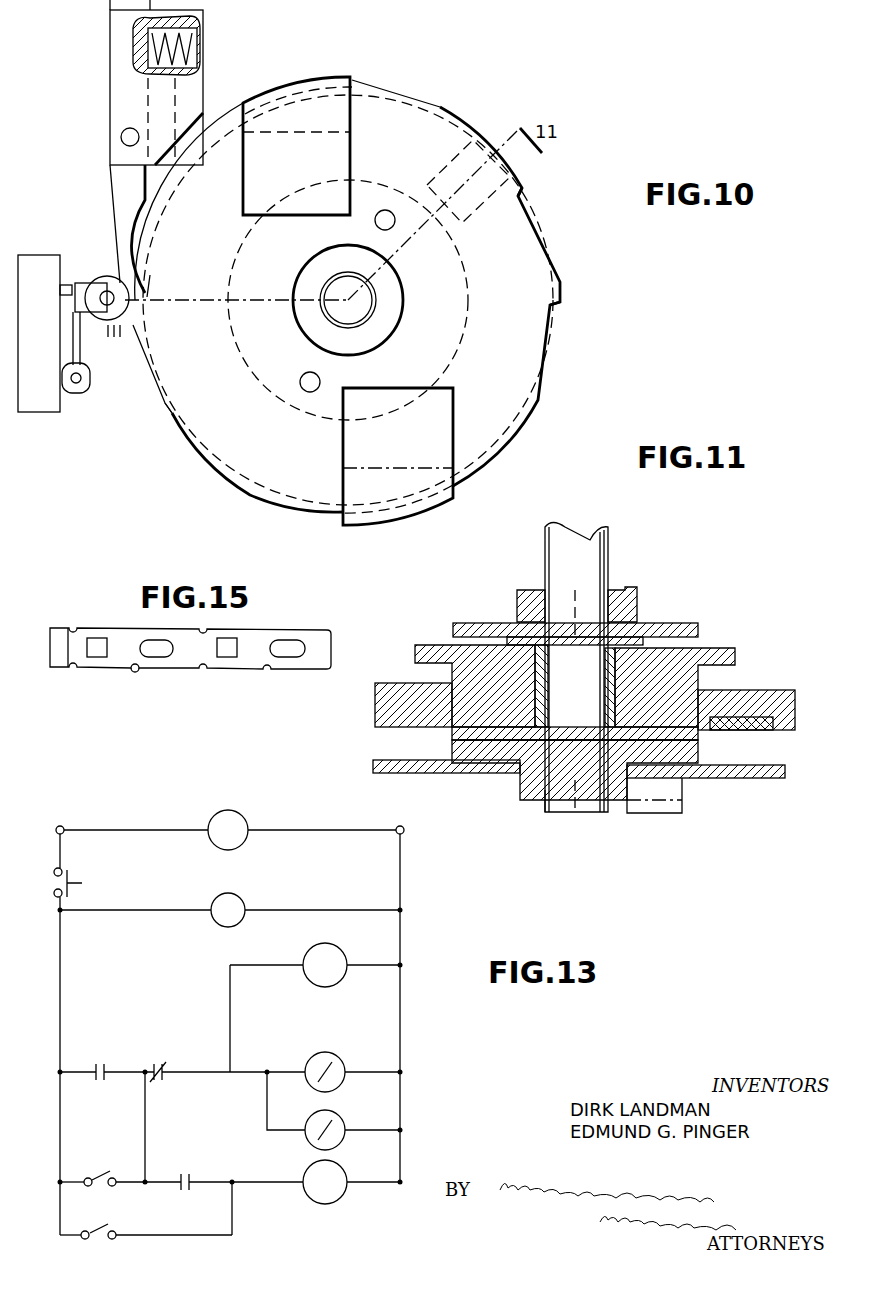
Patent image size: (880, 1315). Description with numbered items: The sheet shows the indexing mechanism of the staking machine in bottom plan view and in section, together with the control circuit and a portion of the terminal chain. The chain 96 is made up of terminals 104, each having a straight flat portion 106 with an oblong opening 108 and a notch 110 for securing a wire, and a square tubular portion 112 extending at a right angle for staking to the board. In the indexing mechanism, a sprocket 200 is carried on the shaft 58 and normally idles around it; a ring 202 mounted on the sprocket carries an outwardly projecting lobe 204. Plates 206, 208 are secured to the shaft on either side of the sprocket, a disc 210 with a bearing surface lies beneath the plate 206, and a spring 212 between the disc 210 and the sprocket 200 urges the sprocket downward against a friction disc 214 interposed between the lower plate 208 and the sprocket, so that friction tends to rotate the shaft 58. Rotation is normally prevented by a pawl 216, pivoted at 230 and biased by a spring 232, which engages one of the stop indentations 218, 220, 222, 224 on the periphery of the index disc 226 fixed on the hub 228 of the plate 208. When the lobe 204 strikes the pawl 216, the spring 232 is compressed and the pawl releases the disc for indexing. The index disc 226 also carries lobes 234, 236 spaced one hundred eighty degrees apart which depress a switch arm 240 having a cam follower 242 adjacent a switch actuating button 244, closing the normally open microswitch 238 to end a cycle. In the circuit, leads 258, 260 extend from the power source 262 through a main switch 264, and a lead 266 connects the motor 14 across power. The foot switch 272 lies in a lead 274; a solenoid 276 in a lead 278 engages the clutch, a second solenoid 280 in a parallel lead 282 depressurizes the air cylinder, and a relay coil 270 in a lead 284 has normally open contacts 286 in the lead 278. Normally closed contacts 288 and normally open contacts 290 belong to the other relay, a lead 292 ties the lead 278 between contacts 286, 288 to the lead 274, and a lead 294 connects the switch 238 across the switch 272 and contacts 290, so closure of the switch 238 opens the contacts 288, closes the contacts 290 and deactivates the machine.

In FIG. 11, the shaft 58 is at (612, 566).
In FIG. 15, the chain 96 is at (200, 675).
In FIG. 15, the terminal 104 is at (118, 668).
In FIG. 15, the straight flat portion 106 is at (138, 634).
In FIG. 15, the oblong opening 108 is at (172, 648).
In FIG. 15, the notch 110 is at (135, 670).
In FIG. 15, the square tubular portion 112 is at (97, 645).
In FIG. 13, the motor 14 is at (230, 893).
In FIG. 11, the sprocket 200 is at (420, 658).
In FIG. 11, the ring 202 is at (740, 692).
In FIG. 10, the lobe 204 is at (478, 138).
In FIG. 11, the lobe 204 is at (757, 735).
In FIG. 11, the plate 206 is at (521, 591).
In FIG. 11, the plate 208 is at (480, 772).
In FIG. 11, the disc 210 is at (458, 626).
In FIG. 11, the spring 212 is at (636, 638).
In FIG. 11, the friction disc 214 is at (455, 735).
In FIG. 10, the pawl 216 is at (110, 193).
In FIG. 10, the stop indentation 218 is at (170, 280).
In FIG. 10, the stop indentation 220 is at (168, 412).
In FIG. 10, the stop indentation 222 is at (552, 308).
In FIG. 10, the stop indentation 224 is at (524, 192).
In FIG. 10, the index disc 226 is at (514, 422).
In FIG. 11, the index disc 226 is at (732, 778).
In FIG. 11, the hub 228 is at (538, 798).
In FIG. 10, the pivot 230 is at (121, 136).
In FIG. 10, the spring 232 is at (202, 52).
In FIG. 10, the lobe 234 is at (352, 95).
In FIG. 10, the lobe 236 is at (448, 500).
In FIG. 10, the microswitch 238 is at (55, 410).
In FIG. 13, the microswitch 238 is at (97, 1226).
In FIG. 10, the switch arm 240 is at (82, 346).
In FIG. 10, the cam follower 242 is at (104, 280).
In FIG. 10, the switch actuating button 244 is at (66, 258).
In FIG. 13, the lead 258 is at (62, 985).
In FIG. 13, the lead 260 is at (403, 950).
In FIG. 13, the source of electrical power 262 is at (248, 818).
In FIG. 13, the main switch 264 is at (80, 868).
In FIG. 13, the lead 266 is at (138, 912).
In FIG. 13, the relay coil 270 is at (335, 985).
In FIG. 13, the manually operated switch 272 is at (100, 1172).
In FIG. 13, the lead 274 is at (164, 1187).
In FIG. 13, the solenoid 276 is at (333, 1056).
In FIG. 13, the lead 278 is at (252, 1068).
In FIG. 13, the second solenoid 280 is at (336, 1112).
In FIG. 13, the lead 282 is at (267, 1102).
In FIG. 13, the lead 284 is at (230, 988).
In FIG. 13, the contacts 286 is at (100, 1064).
In FIG. 13, the contacts 288 is at (167, 1064).
In FIG. 13, the contacts 290 is at (190, 1174).
In FIG. 13, the lead 292 is at (147, 1132).
In FIG. 13, the lead 294 is at (235, 1228).